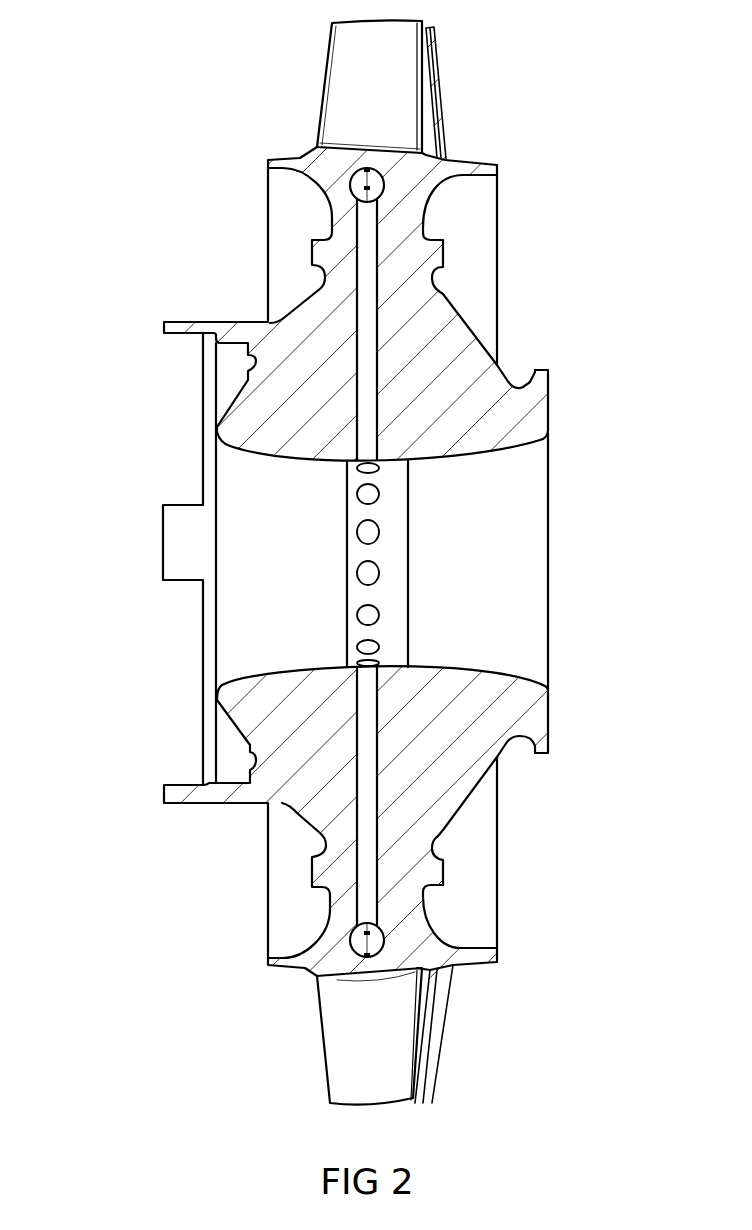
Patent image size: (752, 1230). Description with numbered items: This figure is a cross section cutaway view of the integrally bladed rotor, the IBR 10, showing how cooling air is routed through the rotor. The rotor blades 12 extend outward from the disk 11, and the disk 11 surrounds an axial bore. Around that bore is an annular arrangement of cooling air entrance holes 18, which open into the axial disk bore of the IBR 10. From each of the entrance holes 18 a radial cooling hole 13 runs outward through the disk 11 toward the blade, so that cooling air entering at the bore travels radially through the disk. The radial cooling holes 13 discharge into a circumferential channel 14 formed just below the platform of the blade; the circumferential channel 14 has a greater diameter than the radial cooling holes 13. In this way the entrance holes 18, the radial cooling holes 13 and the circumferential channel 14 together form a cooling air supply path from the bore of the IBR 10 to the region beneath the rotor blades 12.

The IBR 10 is at (178, 247).
The disk 11 is at (302, 406).
The rotor blades 12 is at (365, 90).
The radial cooling holes 13 is at (367, 317).
The circumferential channel 14 is at (375, 185).
The entrance holes 18 is at (367, 535).